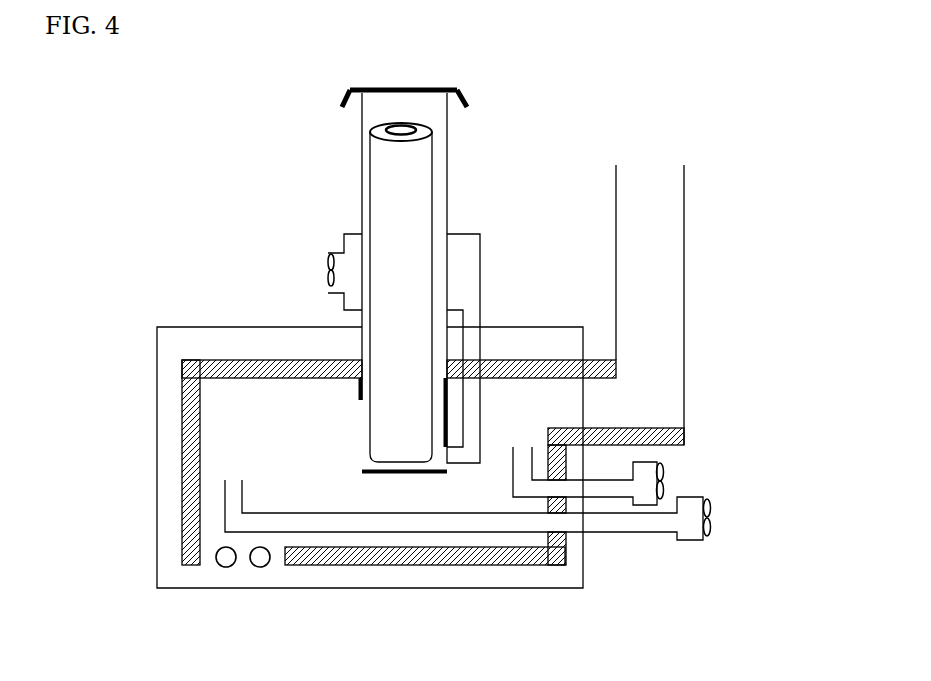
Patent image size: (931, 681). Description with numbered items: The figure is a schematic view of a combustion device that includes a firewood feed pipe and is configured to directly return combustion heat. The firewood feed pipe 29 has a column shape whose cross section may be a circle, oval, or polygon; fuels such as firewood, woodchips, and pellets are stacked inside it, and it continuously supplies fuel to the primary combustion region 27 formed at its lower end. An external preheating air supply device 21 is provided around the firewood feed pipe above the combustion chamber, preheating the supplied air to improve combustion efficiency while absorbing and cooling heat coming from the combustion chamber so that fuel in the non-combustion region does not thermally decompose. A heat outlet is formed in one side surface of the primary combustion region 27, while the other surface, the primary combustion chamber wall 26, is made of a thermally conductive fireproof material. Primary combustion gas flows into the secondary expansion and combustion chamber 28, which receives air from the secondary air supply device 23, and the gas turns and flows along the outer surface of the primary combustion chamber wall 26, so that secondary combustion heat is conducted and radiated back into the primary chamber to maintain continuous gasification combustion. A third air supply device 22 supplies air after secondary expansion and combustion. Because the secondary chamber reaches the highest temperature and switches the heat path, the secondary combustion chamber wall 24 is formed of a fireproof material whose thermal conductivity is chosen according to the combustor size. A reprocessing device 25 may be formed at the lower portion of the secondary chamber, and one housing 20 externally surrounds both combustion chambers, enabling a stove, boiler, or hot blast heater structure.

The housing 20 is at (156, 343).
The external preheating air supply device 21 is at (312, 270).
The third air supply device 22 is at (675, 470).
The secondary air supply device 23 is at (722, 518).
The secondary combustion chamber wall 24 is at (182, 485).
The reprocessing device 25 is at (226, 572).
The primary combustion chamber wall 26 is at (400, 473).
The primary combustion region 27 is at (438, 427).
The secondary expansion and combustion chamber 28 is at (252, 425).
The firewood feed pipe 29 is at (447, 163).